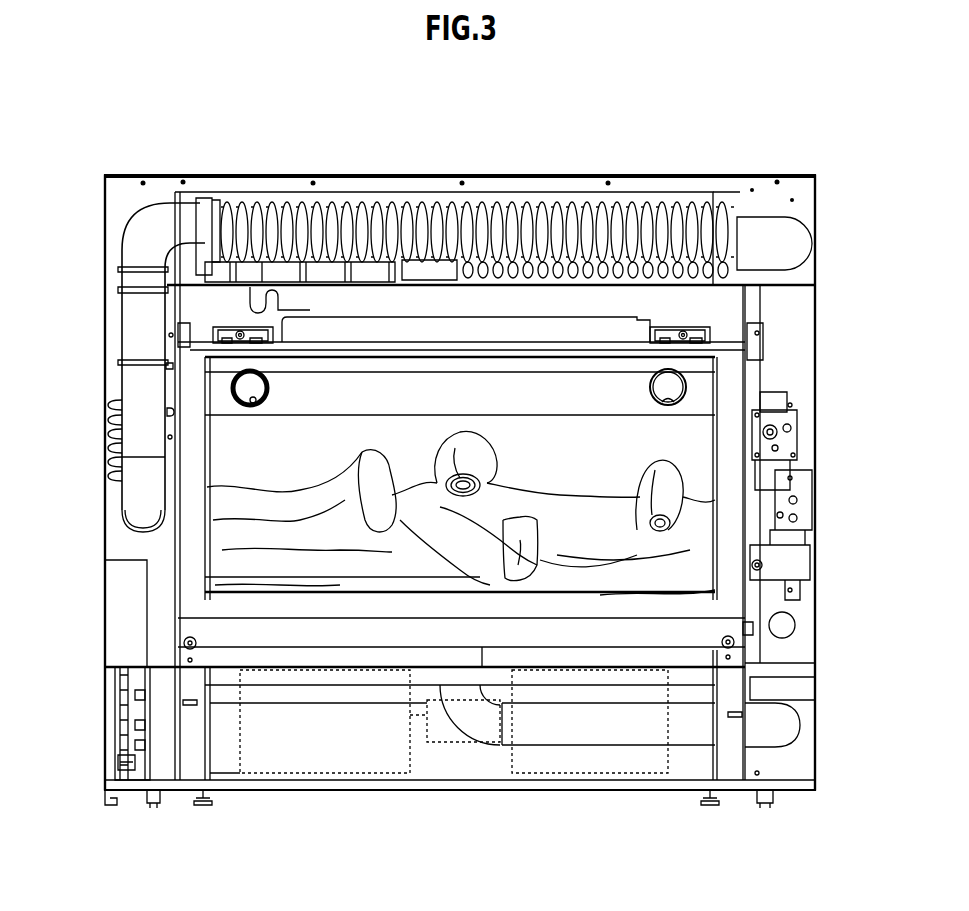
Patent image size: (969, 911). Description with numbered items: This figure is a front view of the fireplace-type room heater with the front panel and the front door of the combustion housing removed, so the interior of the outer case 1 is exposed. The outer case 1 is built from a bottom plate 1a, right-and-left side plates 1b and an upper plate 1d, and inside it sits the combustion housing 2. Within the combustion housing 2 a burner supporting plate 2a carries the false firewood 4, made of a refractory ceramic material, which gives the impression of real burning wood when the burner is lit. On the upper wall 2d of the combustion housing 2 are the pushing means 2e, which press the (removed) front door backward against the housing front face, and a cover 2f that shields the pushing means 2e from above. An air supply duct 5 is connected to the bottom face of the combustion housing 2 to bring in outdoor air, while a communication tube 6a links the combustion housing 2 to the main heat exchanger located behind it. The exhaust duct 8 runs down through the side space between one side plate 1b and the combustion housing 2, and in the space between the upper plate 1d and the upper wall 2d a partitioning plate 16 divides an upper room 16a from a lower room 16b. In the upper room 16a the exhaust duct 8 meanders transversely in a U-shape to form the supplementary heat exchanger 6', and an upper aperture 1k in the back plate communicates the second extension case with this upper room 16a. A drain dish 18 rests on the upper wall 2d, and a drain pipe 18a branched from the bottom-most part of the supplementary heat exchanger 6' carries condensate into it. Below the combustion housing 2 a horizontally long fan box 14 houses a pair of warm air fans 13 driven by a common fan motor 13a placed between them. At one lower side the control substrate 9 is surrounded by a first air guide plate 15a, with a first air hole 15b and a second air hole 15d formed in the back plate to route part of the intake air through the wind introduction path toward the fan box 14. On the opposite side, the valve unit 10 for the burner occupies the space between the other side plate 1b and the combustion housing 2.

The outer case 1 is at (706, 170).
The bottom plate 1a is at (497, 790).
The side plate 1b is at (105, 211).
The upper plate 1d is at (462, 175).
The upper aperture 1k is at (660, 195).
The combustion housing 2 is at (287, 647).
The burner supporting plate 2a is at (318, 572).
The upper wall 2d is at (372, 342).
The pushing means 2e is at (238, 328).
The cover 2f is at (190, 324).
The false firewood 4 is at (326, 504).
The air supply duct 5 is at (598, 745).
The supplementary heat exchanger 6' is at (466, 199).
The communication tube 6a is at (253, 406).
The exhaust duct 8 is at (158, 215).
The control substrate 9 is at (114, 722).
The valve unit 10 is at (797, 497).
The warm air fan 13 is at (363, 775).
The fan motor 13a is at (462, 744).
The fan box 14 is at (320, 745).
The first air guide plate 15a is at (147, 597).
The first air hole 15b is at (138, 772).
The second air hole 15d is at (110, 448).
The partitioning plate 16 is at (610, 213).
The upper room 16a is at (300, 269).
The lower room 16b is at (565, 312).
The drain dish 18 is at (415, 325).
The drain pipe 18a is at (280, 304).